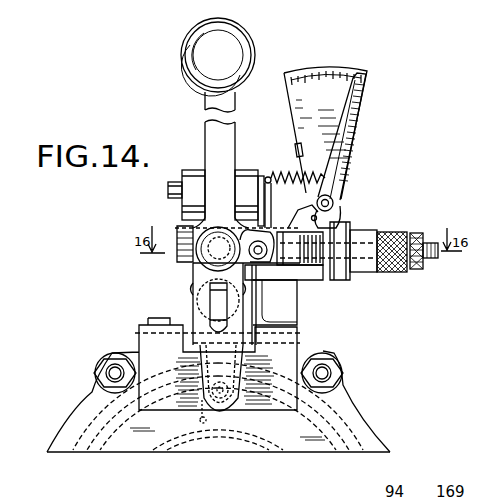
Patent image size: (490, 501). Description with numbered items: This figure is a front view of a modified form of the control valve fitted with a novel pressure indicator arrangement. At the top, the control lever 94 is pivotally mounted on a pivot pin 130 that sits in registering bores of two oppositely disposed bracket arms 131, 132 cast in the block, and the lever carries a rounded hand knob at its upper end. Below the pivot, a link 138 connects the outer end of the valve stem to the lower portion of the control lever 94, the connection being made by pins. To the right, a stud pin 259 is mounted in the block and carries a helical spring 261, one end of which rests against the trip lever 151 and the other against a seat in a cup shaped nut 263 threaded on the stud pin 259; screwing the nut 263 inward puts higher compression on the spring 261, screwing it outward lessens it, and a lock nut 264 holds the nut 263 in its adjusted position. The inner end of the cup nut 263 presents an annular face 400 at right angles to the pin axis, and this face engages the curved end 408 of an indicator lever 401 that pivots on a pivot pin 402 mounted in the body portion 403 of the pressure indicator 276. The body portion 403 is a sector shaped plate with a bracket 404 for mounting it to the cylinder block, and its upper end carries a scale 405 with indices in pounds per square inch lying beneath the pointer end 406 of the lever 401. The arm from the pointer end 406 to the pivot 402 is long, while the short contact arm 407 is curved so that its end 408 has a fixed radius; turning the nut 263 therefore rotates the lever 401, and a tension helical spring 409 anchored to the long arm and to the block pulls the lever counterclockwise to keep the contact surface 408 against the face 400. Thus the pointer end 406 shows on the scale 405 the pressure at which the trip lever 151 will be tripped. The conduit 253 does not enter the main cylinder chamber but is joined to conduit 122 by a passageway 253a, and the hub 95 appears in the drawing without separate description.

The control lever 94 is at (212, 103).
The hub 95 is at (205, 258).
The conduit 122 is at (135, 333).
The pivot pin 130 is at (168, 190).
The bracket arm 131 is at (191, 172).
The bracket arm 132 is at (252, 172).
The link 138 is at (214, 296).
The trip lever 151 is at (293, 282).
The conduit 253 is at (298, 337).
The passageway 253a is at (252, 400).
The stud pin 259 is at (433, 259).
The helical spring 261 is at (310, 282).
The cup shaped nut 263 is at (364, 240).
The lock nut 264 is at (410, 233).
The pressure indicator 276 is at (375, 115).
The annular face 400 is at (322, 285).
The indicator lever 401 is at (345, 155).
The pivot pin 402 is at (334, 206).
The body portion 403 is at (325, 133).
The bracket 404 is at (283, 170).
The scale 405 is at (301, 79).
The pointer end 406 is at (362, 70).
The contact arm 407 is at (304, 226).
The curved end 408 is at (340, 282).
The tension helical spring 409 is at (313, 168).